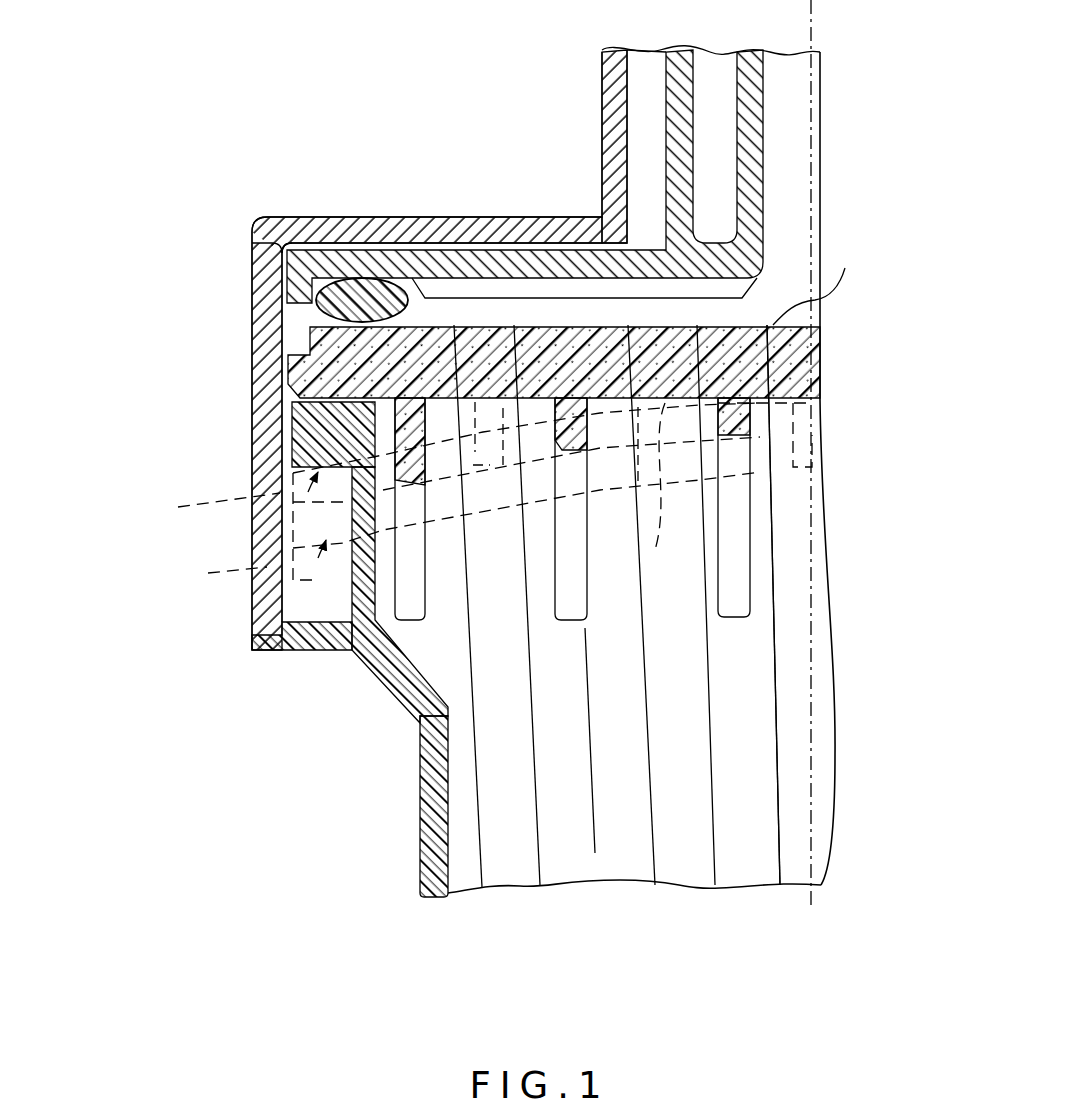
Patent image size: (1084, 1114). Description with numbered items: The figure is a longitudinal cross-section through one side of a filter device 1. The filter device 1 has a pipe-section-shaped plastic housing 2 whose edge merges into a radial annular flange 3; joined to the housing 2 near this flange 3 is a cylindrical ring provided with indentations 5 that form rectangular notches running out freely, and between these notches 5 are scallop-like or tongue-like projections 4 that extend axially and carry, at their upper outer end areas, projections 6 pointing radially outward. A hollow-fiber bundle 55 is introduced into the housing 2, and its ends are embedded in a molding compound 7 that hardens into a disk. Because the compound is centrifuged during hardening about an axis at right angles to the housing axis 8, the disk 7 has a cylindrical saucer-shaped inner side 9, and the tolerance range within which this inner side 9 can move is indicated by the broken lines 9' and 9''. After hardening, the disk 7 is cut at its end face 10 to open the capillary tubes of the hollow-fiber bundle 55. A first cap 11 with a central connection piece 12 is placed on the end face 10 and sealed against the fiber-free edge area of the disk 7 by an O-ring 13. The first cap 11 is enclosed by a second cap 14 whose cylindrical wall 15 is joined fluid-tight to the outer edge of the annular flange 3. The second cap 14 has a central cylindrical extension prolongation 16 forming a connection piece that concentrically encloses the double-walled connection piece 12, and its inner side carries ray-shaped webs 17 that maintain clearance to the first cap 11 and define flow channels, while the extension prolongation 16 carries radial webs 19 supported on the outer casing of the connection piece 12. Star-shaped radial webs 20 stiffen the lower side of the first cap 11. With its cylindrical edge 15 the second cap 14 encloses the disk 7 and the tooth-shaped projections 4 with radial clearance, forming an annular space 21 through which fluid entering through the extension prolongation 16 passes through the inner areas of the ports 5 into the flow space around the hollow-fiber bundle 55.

The filter device 1 is at (231, 200).
The housing 2 is at (420, 808).
The annular flange 3 is at (302, 638).
The projections 4 is at (358, 597).
The indentations 5 is at (588, 598).
The projections 6 is at (290, 447).
The molding compound 7 is at (777, 358).
The housing axis 8 is at (813, 743).
The inner side 9 is at (593, 491).
The broken line 9' is at (452, 483).
The broken line 9'' is at (467, 532).
The end face 10 is at (819, 279).
The first cap 11 is at (490, 260).
The connection piece 12 is at (763, 143).
The O-ring 13 is at (347, 290).
The second cap 14 is at (383, 225).
The cylindrical wall 15 is at (255, 335).
The cylindrical extension prolongation 16 is at (603, 100).
The ray-shaped webs 17 is at (283, 247).
The radial webs 19 is at (645, 152).
The radial webs 20 is at (438, 297).
The annular space 21 is at (292, 415).
The hollow-fiber bundle 55 is at (780, 832).